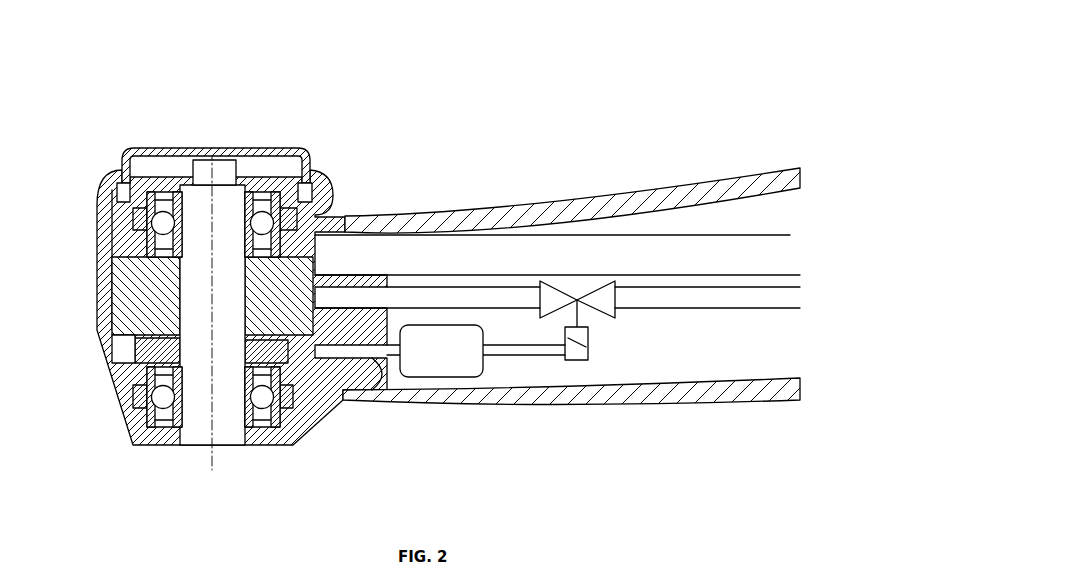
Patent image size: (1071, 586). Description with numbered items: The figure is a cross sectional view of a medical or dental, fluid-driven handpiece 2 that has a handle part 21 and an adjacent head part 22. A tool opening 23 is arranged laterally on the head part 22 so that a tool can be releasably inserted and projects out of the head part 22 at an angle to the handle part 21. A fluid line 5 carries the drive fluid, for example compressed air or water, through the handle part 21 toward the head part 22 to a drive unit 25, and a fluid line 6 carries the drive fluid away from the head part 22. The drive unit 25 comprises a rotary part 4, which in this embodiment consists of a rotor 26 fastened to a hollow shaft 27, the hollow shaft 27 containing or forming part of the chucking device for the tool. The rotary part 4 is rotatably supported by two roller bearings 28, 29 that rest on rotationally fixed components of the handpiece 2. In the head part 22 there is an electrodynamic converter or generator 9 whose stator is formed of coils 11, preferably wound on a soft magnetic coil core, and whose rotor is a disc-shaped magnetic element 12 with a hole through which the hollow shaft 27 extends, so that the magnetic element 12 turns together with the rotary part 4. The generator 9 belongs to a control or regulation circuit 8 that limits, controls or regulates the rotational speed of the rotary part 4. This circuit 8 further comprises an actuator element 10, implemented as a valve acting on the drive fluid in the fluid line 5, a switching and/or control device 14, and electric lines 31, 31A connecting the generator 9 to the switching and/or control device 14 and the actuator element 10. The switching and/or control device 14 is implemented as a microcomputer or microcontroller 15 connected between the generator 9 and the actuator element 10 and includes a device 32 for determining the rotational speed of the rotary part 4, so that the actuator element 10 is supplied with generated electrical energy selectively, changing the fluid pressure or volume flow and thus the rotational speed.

The handpiece 2 is at (553, 88).
The rotary part 4 is at (100, 265).
The fluid line 5 is at (790, 308).
The fluid line 6 is at (790, 237).
The control or regulation circuit 8 is at (350, 375).
The electrodynamic converter or generator 9 is at (122, 385).
The actuator element 10 is at (605, 360).
The coils 11 is at (125, 363).
The magnetic element 12 is at (143, 347).
The switching and/or control device 14 is at (453, 390).
The microcomputer or microcontroller 15 is at (468, 372).
The handle part 21 is at (623, 180).
The head part 22 is at (118, 138).
The tool opening 23 is at (250, 442).
The drive unit 25 is at (95, 300).
The rotor 26 is at (178, 296).
The hollow shaft 27 is at (236, 185).
The roller bearing 28 is at (265, 203).
The roller bearing 29 is at (260, 425).
The electric line 31 is at (508, 356).
The electric line 31A is at (378, 400).
The device for determination of the rotational speed 32 is at (415, 384).